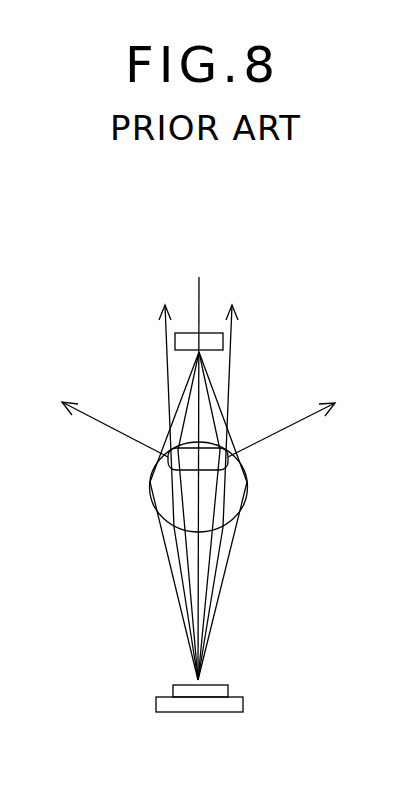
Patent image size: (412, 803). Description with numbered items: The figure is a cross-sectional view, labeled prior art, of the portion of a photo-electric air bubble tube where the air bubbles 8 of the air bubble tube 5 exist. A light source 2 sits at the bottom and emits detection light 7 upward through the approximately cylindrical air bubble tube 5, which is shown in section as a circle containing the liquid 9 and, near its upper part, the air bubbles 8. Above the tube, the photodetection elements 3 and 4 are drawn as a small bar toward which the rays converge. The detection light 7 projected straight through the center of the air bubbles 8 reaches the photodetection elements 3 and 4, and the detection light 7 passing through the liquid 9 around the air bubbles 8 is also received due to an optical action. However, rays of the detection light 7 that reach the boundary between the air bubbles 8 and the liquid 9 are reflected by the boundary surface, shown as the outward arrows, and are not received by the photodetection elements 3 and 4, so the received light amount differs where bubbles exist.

The light source 2 is at (237, 697).
The photodetection element 3 is at (265, 321).
The photodetection element 4 is at (223, 342).
The air bubble tube 5 is at (225, 510).
The detection light 7 is at (220, 617).
The air bubbles 8 is at (183, 457).
The liquid 9 is at (163, 495).